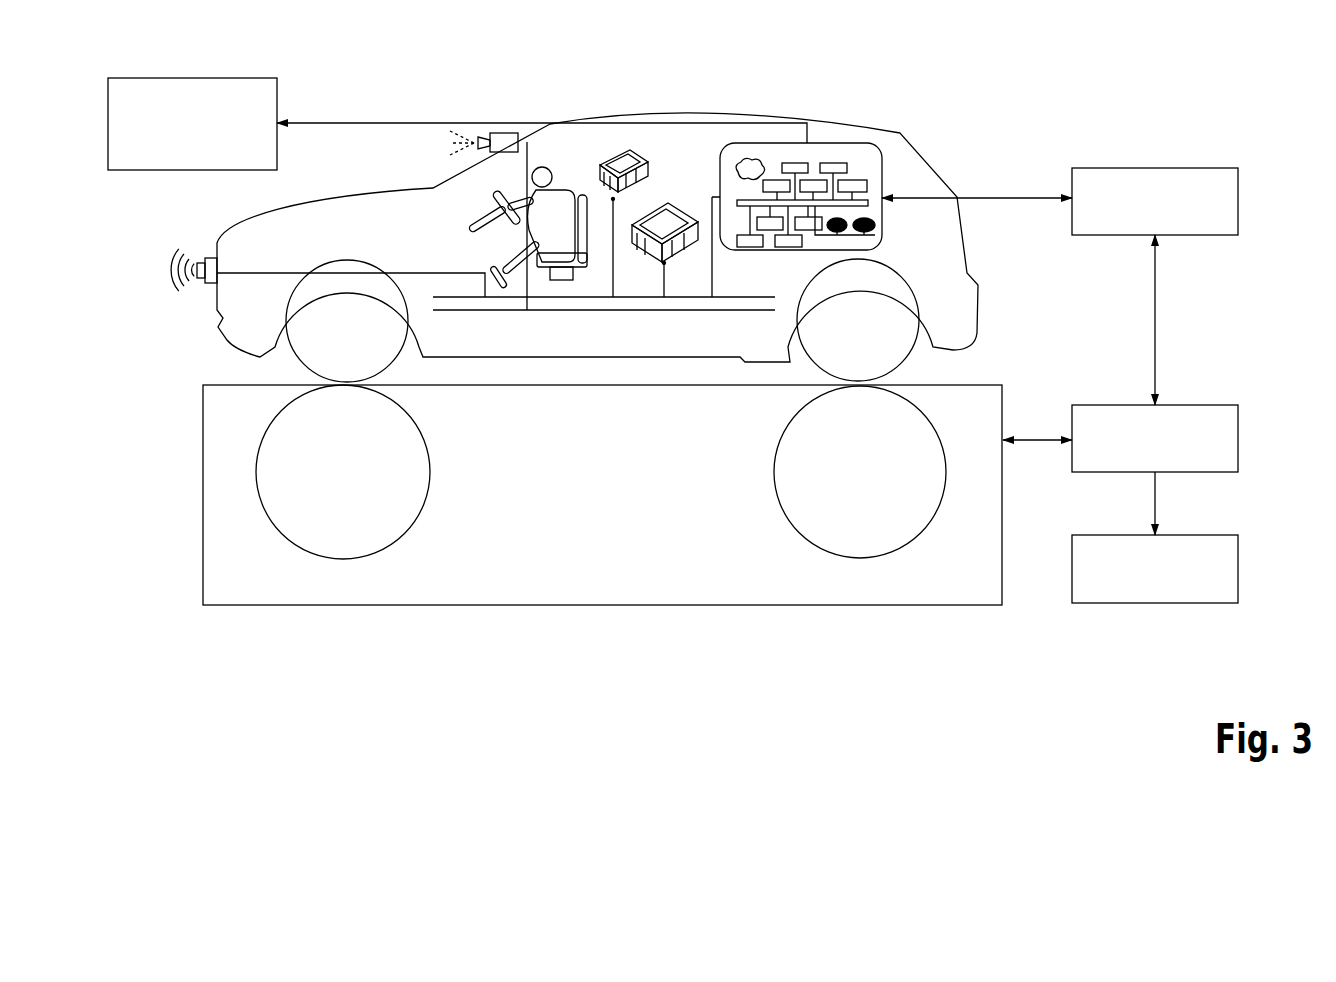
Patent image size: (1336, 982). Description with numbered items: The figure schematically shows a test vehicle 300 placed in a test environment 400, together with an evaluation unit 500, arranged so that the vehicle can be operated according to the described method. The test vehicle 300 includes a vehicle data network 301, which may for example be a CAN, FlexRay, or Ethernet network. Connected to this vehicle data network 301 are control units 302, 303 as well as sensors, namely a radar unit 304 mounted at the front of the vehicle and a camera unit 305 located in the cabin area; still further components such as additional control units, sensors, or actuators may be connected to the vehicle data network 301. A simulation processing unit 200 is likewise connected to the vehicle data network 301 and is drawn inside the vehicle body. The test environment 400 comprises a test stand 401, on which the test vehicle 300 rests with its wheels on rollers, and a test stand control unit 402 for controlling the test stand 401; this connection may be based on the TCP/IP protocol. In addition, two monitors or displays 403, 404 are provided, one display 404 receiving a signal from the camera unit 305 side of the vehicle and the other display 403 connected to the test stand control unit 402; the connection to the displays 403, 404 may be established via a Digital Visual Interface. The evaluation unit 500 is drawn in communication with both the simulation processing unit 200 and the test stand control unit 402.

The simulation processing unit 200 is at (882, 228).
The test vehicle 300 is at (633, 112).
The vehicle data network 301 is at (436, 297).
The control unit 302 is at (640, 163).
The control unit 303 is at (673, 210).
The radar unit 304 is at (207, 286).
The camera unit 305 is at (505, 132).
The test environment 400 is at (1214, 349).
The test stand 401 is at (758, 582).
The test stand control unit 402 is at (1107, 422).
The monitor or display 403 is at (1113, 585).
The monitor or display 404 is at (160, 87).
The evaluation unit 500 is at (1142, 183).